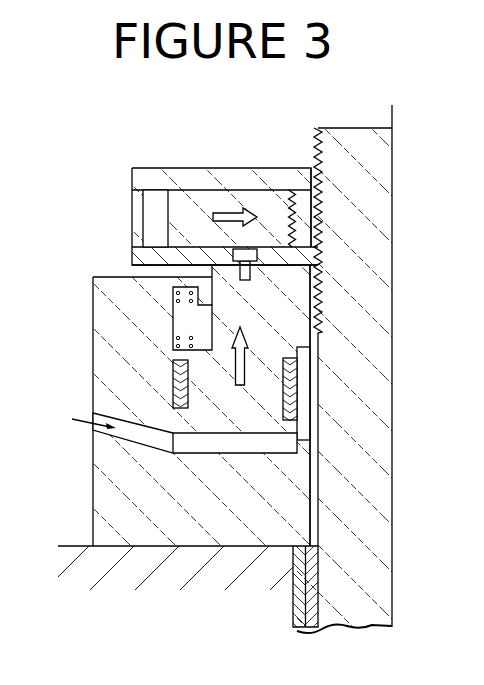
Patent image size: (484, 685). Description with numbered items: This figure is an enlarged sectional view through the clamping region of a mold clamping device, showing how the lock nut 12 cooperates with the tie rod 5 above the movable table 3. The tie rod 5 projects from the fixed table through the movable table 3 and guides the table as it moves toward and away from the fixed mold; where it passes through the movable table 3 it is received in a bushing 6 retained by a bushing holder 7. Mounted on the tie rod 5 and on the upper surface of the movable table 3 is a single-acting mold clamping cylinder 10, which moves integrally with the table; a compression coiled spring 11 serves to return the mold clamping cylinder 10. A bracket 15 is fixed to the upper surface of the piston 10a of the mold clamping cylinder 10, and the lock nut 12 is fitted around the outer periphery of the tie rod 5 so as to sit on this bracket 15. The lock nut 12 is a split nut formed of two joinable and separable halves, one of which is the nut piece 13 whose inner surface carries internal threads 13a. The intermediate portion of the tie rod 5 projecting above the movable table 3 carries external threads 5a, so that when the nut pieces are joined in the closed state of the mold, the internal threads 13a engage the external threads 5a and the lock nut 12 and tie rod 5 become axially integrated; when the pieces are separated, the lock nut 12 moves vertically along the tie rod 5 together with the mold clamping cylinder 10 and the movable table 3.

The movable table 3 is at (76, 546).
The tie rod 5 is at (358, 158).
The external threads 5a is at (313, 163).
The bushing 6 is at (310, 580).
The bushing holder 7 is at (300, 598).
The mold clamping cylinder 10 is at (93, 289).
The piston 10a is at (372, 320).
The compression coiled spring 11 is at (175, 290).
The lock nut 12 is at (166, 206).
The nut piece 13 is at (233, 192).
The internal threads 13a is at (377, 243).
The bracket 15 is at (145, 256).